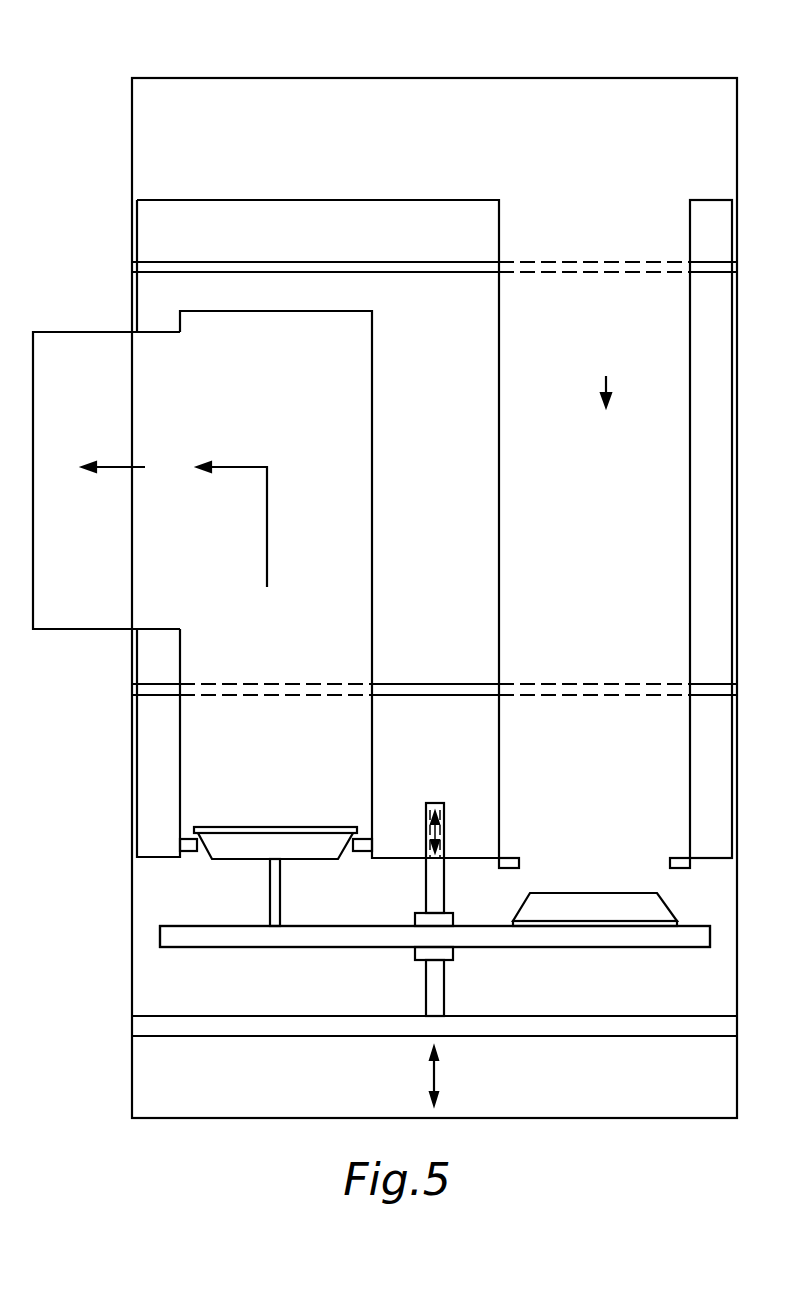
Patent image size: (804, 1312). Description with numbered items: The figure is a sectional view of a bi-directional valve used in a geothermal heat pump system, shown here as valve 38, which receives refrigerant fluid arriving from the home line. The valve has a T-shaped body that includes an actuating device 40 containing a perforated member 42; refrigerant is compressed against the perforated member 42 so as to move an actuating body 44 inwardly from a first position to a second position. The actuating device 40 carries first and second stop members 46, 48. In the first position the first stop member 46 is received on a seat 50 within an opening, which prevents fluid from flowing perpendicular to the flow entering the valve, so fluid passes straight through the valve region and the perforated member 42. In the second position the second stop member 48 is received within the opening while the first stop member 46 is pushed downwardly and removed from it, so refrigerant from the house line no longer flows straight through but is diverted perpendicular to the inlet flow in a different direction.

The housing 38 is at (675, 72).
The actuating device 40 is at (157, 925).
The perforated member 42 is at (265, 1036).
The actuating body 44 is at (322, 948).
The first stop member 46 is at (262, 827).
The second stop member 48 is at (595, 893).
The seat 50 is at (362, 833).